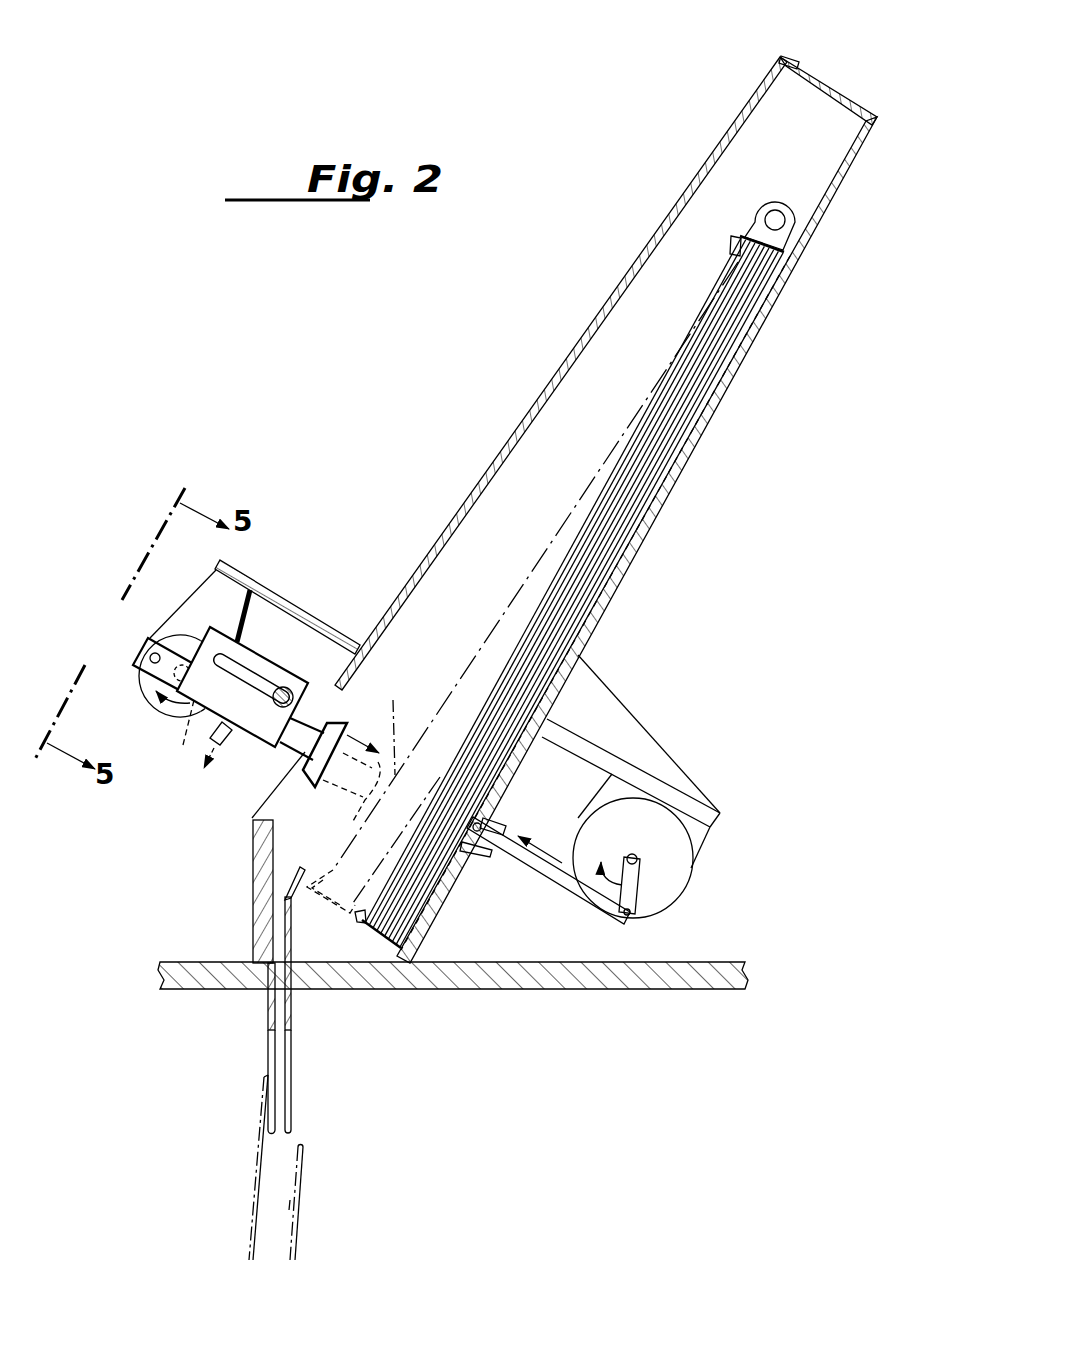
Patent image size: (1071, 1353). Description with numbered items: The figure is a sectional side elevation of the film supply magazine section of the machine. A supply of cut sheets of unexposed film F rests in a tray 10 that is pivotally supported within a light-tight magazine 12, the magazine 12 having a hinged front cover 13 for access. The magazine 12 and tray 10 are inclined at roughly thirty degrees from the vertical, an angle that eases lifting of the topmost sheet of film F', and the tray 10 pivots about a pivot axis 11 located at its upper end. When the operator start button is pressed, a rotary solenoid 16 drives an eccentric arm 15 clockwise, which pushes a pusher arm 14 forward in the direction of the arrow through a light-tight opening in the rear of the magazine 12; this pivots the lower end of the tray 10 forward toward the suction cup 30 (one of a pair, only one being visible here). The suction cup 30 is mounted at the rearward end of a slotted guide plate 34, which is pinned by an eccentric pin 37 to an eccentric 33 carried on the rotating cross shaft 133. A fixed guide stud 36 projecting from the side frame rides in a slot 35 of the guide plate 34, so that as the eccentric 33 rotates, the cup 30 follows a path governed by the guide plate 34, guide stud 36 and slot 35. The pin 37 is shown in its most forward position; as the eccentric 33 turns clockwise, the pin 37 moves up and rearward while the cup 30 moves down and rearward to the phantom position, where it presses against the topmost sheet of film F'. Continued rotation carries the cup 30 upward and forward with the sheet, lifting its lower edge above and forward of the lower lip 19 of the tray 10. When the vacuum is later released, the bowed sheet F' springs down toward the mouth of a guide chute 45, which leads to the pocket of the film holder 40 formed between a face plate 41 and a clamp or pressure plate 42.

The tray 10 is at (650, 486).
The pivot axis 11 is at (777, 211).
The light-tight magazine 12 is at (782, 298).
The hinged front cover 13 is at (593, 318).
The pusher arm 14 is at (558, 872).
The eccentric arm 15 is at (633, 897).
The rotary solenoid 16 is at (667, 867).
The lower lip 19 is at (353, 916).
The suction cup 30 is at (345, 727).
The eccentric 33 is at (170, 640).
The slotted guide plate 34 is at (220, 646).
The slot 35 is at (255, 657).
The fixed guide stud 36 is at (287, 689).
The eccentric pin 37 is at (147, 662).
The film holder 40 is at (298, 1239).
The face plate 41 is at (256, 1162).
The clamp or pressure plate 42 is at (304, 1168).
The guide chute 45 is at (282, 1011).
The cross shaft 133 is at (188, 737).
The film F is at (569, 592).
The topmost sheet of film F' is at (535, 566).